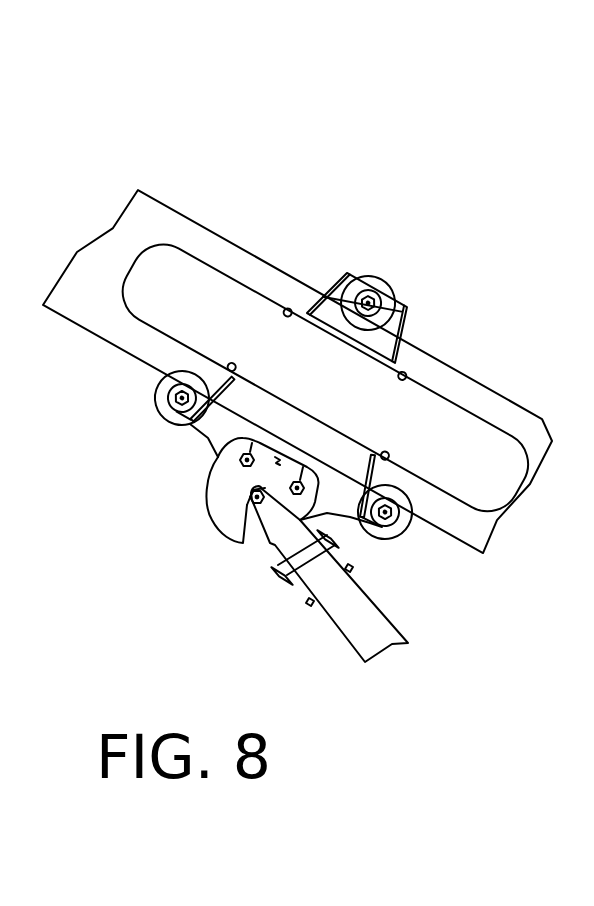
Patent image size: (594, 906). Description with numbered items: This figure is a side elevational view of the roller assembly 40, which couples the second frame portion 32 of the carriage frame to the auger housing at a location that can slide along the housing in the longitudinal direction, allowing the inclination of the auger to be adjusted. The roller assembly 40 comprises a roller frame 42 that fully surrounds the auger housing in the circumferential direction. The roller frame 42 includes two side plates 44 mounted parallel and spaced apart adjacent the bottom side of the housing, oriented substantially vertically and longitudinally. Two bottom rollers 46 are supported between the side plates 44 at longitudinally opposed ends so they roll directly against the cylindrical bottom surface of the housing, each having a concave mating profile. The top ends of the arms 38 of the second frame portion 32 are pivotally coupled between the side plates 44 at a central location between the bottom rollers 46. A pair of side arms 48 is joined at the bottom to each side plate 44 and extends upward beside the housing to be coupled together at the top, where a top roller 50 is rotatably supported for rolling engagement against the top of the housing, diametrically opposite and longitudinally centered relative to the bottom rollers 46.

The roller assembly 40 is at (368, 140).
The side plates 44 is at (342, 498).
The top roller 50 is at (397, 287).
The side arms 48 is at (307, 313).
The bottom rollers 46 is at (155, 422).
The roller frame 42 is at (207, 508).
The arms 38 is at (358, 622).
The second frame portion 32 is at (303, 612).